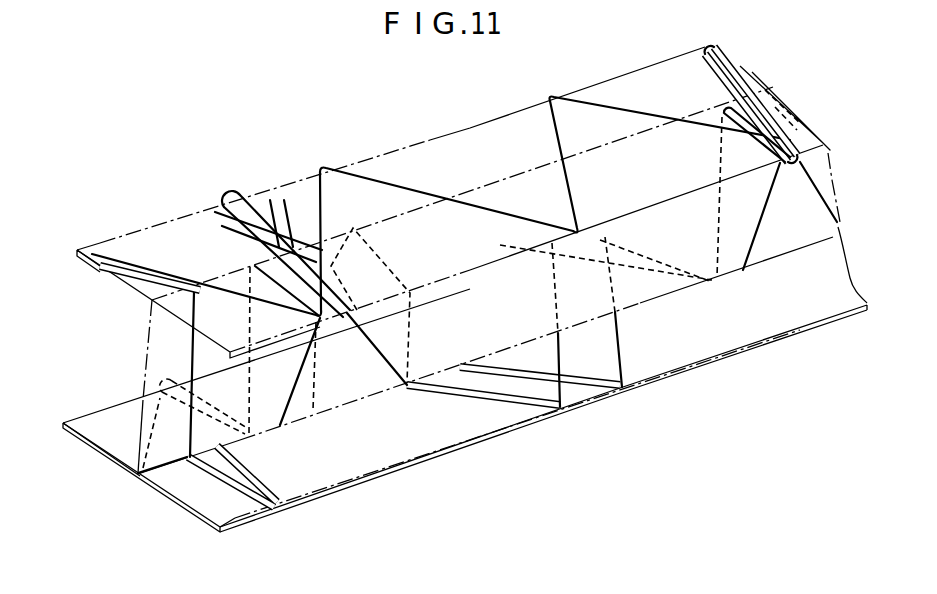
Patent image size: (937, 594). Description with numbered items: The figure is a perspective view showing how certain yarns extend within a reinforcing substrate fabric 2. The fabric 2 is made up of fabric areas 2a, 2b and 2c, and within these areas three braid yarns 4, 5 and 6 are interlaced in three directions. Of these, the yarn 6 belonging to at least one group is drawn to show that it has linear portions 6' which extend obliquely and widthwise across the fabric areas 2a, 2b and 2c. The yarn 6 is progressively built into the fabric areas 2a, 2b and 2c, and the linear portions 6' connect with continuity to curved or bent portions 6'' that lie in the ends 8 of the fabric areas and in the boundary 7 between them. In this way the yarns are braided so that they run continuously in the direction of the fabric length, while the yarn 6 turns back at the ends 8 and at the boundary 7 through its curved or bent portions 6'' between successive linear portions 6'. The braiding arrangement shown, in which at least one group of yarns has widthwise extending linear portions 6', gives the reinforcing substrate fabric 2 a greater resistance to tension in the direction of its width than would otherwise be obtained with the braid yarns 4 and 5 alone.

The reinforcing substrate fabric 2 is at (415, 126).
The fabric area 2a is at (493, 337).
The fabric area 2b is at (157, 230).
The fabric area 2c is at (397, 453).
The braid yarn 4 is at (242, 200).
The braid yarn 5 is at (275, 198).
The braid yarn 6 is at (441, 206).
The linear portions 6' is at (470, 303).
The curved or bent portions 6'' is at (453, 341).
The boundary 7 is at (152, 306).
The ends of the fabric areas 8 is at (96, 247).